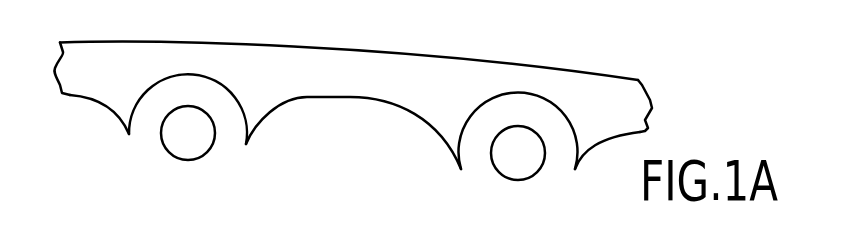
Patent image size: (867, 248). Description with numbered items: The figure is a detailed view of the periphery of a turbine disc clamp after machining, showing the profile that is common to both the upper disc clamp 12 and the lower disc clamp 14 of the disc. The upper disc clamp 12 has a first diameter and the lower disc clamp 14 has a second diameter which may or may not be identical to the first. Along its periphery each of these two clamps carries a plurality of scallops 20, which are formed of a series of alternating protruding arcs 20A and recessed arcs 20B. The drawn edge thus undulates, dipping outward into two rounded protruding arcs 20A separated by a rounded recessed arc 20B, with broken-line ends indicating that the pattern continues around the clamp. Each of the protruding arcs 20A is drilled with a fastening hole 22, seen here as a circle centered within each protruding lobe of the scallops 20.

The upper disc clamp 12 is at (353, 126).
The lower disc clamp 14 is at (350, 58).
The scallops 20 is at (355, 159).
The protruding arcs 20A is at (188, 194).
The recessed arcs 20B is at (352, 98).
The fastening hole 22 is at (189, 120).